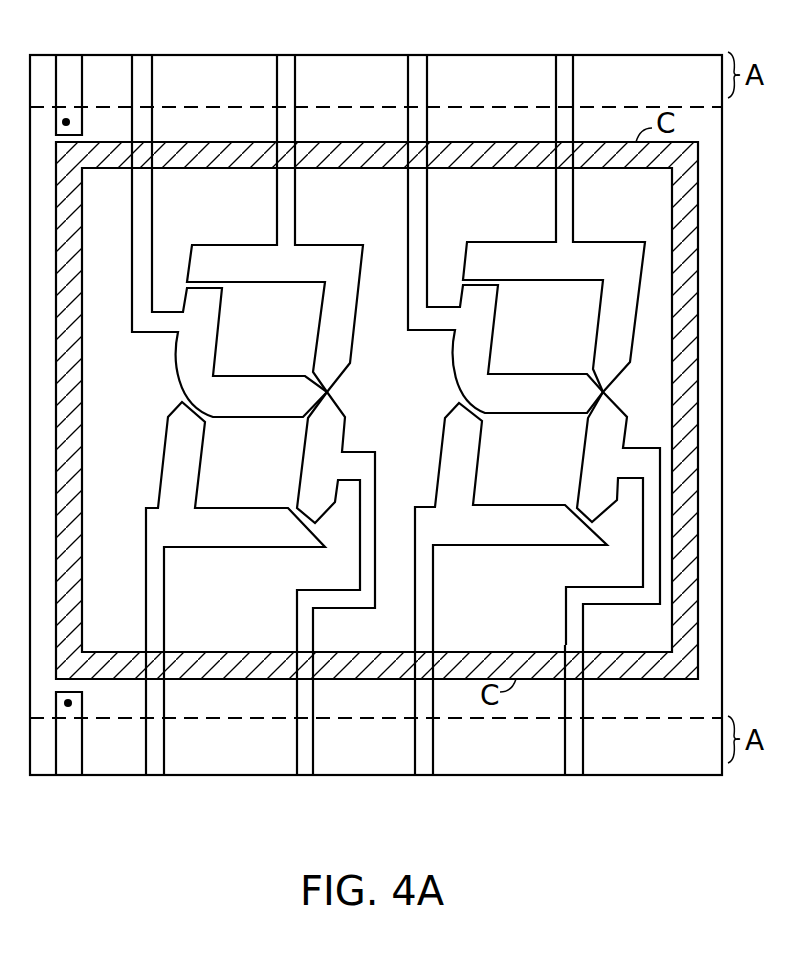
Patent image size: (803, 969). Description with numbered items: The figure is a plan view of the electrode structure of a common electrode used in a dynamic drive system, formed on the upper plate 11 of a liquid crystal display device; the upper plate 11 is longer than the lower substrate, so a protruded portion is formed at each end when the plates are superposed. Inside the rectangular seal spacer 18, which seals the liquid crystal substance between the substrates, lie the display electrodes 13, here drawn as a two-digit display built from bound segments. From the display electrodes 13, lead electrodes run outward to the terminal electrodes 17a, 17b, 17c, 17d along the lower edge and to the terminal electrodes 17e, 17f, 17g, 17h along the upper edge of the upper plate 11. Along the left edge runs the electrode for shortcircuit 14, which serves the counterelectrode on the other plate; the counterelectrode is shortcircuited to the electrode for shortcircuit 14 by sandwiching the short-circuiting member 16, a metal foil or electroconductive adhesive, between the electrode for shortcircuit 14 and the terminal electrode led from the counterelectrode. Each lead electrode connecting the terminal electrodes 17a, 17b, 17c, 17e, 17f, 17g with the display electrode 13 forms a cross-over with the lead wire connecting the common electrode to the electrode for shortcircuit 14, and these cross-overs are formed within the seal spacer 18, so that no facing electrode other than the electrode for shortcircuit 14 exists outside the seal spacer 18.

The upper plate 11 is at (710, 192).
The display electrodes 13 is at (364, 222).
The electrode for shortcircuit 14 is at (68, 765).
The short-circuiting member 16 is at (66, 122).
The terminal electrode 17a is at (152, 765).
The terminal electrode 17b is at (303, 765).
The terminal electrode 17c is at (421, 765).
The terminal electrode 17d is at (571, 765).
The terminal electrode 17e is at (143, 62).
The terminal electrode 17f is at (287, 62).
The terminal electrode 17g is at (418, 62).
The terminal electrode 17h is at (564, 62).
The seal spacer 18 is at (698, 392).